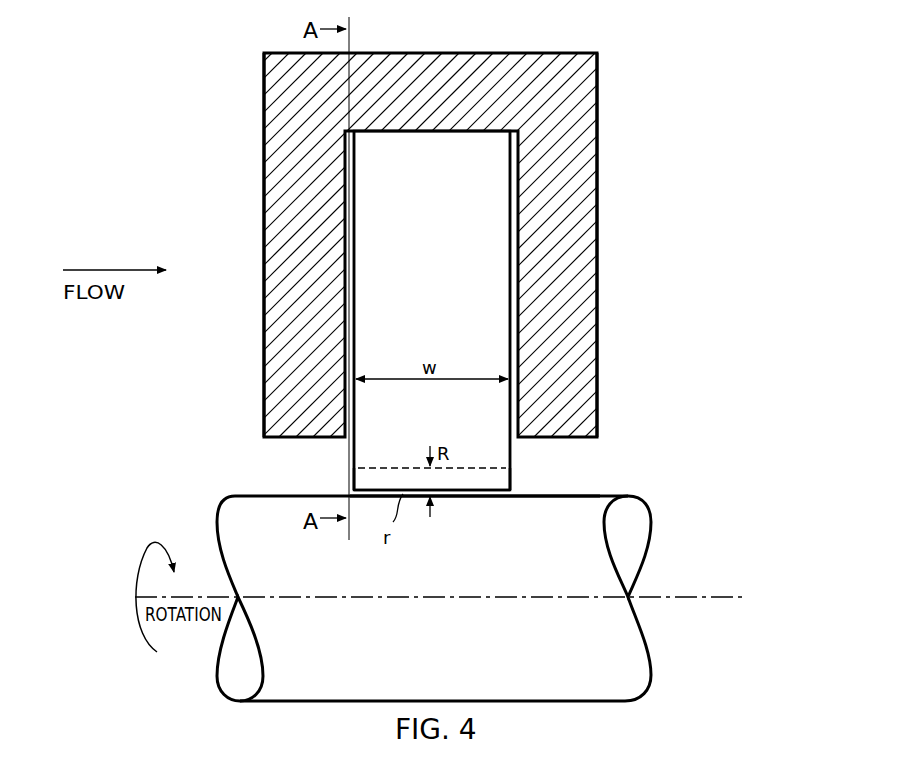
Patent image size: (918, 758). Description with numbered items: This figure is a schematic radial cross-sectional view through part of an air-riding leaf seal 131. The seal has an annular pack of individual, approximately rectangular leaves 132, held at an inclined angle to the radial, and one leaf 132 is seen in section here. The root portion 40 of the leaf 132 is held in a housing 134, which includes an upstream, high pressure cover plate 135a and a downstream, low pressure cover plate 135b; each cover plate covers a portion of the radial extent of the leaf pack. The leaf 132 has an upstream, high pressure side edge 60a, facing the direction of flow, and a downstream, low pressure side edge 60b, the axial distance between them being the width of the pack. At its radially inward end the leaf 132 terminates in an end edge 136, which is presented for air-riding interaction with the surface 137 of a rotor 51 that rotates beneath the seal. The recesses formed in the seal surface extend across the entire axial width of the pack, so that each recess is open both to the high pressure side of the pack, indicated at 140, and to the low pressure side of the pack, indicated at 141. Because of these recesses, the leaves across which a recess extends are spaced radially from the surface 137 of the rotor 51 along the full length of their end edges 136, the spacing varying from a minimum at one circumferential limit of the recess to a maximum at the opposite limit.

The air-riding leaf seal 131 is at (704, 78).
The housing 134 is at (583, 80).
The upstream (high pressure) cover plate 135a is at (286, 152).
The downstream (low pressure) cover plate 135b is at (583, 162).
The leaf 132 is at (478, 352).
The root portion 40 is at (430, 195).
The upstream (high pressure) side edge 60a is at (353, 315).
The downstream (low pressure) side edge 60b is at (512, 305).
The end edge 136 is at (492, 496).
The high pressure (upstream) side of the pack 140 is at (352, 478).
The low pressure (downstream) side of the pack 141 is at (511, 478).
The rotor surface 137 is at (605, 494).
The rotor 51 is at (444, 583).